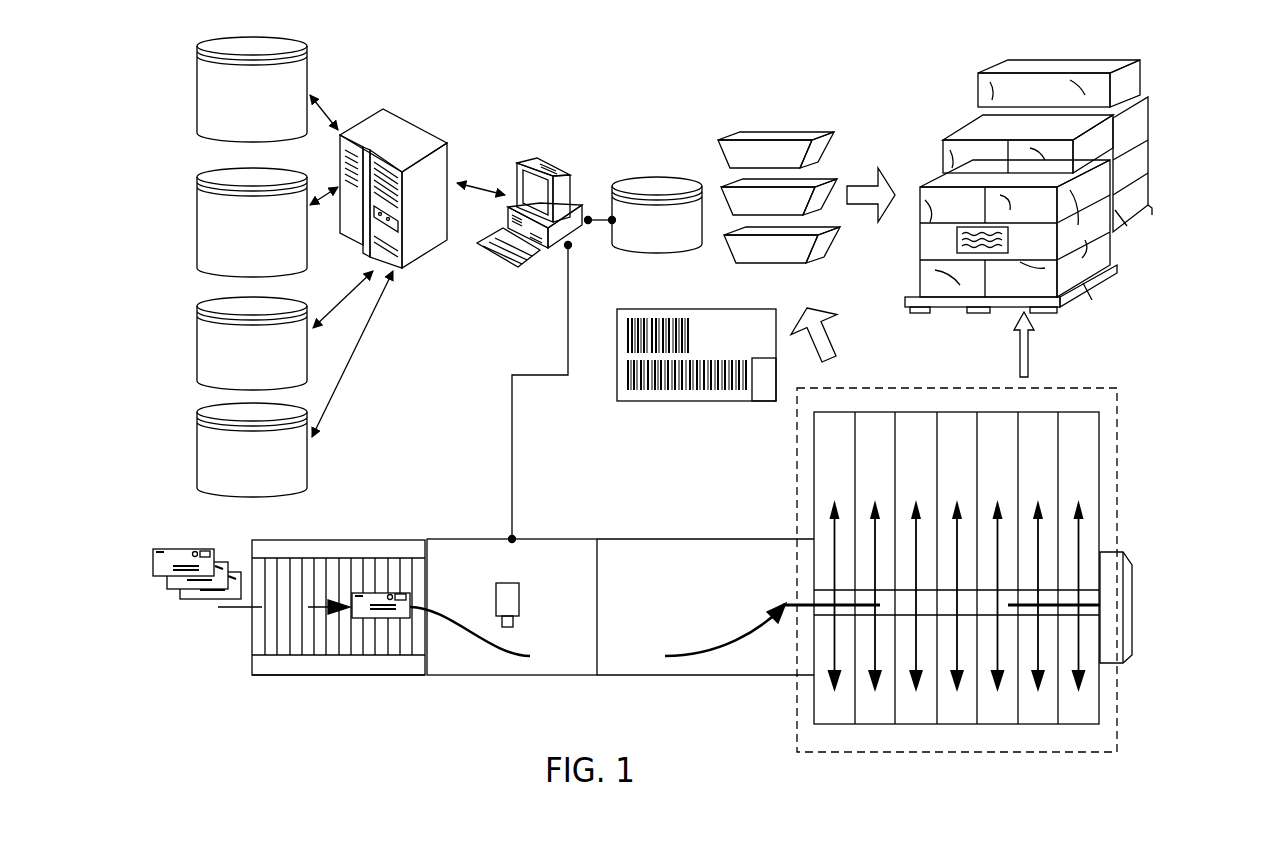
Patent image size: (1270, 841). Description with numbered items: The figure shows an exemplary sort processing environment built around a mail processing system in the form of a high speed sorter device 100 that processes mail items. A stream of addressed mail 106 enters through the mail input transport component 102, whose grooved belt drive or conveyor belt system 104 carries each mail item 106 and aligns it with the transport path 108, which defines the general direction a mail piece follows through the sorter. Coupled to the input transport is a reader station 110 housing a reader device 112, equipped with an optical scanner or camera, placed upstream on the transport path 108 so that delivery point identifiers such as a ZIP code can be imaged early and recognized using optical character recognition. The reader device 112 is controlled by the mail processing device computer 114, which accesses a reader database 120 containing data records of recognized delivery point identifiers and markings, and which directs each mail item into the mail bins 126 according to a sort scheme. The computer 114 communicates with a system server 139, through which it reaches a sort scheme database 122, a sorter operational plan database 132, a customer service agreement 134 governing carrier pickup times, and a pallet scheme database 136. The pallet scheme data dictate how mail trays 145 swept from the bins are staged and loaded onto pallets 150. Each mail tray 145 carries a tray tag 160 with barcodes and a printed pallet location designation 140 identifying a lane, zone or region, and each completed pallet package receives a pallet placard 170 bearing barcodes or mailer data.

The high speed sorter device 100 is at (687, 703).
The mail input transport component 102 is at (392, 498).
The conveyor belt system 104 is at (270, 635).
The mail item 106 is at (192, 615).
The transport path 108 is at (468, 637).
The reader station 110 is at (458, 538).
The reader device 112 is at (520, 597).
The mail processing device computer 114 is at (558, 147).
The reader database 120 is at (657, 258).
The sort scheme database 122 is at (197, 98).
The mail bins P1-Pn 126 is at (1117, 738).
The sorter operational plan database 132 is at (198, 233).
The customer service agreement 134 is at (198, 352).
The pallet scheme database 136 is at (200, 455).
The system server 139 is at (412, 127).
The pallet location designation 140 is at (754, 400).
The mail tray 145 is at (790, 112).
The pallet 150 is at (932, 92).
The tray tag 160 is at (655, 393).
The pallet placard 170 is at (972, 316).